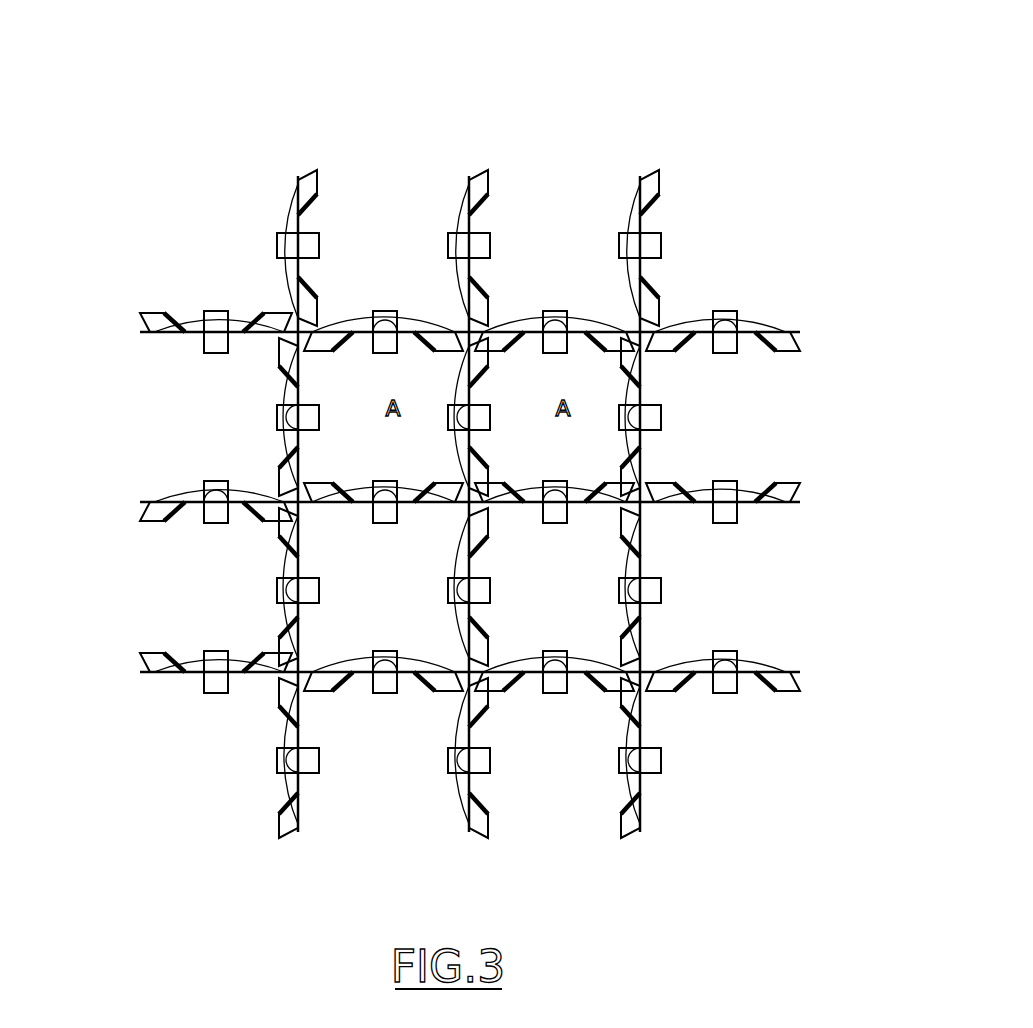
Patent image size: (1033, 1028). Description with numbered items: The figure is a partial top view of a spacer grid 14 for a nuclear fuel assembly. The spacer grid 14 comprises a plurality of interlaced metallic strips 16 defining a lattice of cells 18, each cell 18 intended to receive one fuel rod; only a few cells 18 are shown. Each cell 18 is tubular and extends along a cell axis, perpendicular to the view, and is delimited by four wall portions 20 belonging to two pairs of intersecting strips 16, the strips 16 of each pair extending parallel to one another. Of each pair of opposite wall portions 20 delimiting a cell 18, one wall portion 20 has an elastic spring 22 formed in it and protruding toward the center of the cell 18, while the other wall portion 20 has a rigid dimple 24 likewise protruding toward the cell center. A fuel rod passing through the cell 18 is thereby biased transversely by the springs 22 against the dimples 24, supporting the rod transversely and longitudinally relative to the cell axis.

The spacer grid 14 is at (731, 76).
The metallic strip 16 is at (294, 166).
The cell 18 is at (205, 250).
The wall portion 20 is at (366, 326).
The elastic spring 22 is at (396, 308).
The rigid dimple 24 is at (320, 417).